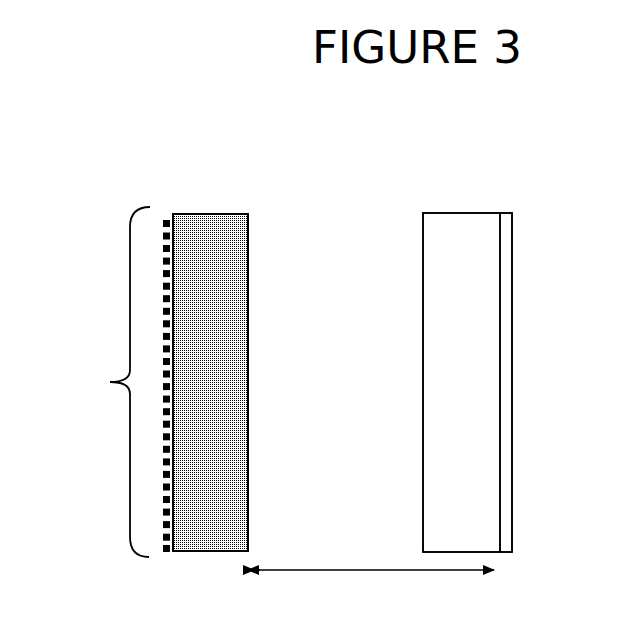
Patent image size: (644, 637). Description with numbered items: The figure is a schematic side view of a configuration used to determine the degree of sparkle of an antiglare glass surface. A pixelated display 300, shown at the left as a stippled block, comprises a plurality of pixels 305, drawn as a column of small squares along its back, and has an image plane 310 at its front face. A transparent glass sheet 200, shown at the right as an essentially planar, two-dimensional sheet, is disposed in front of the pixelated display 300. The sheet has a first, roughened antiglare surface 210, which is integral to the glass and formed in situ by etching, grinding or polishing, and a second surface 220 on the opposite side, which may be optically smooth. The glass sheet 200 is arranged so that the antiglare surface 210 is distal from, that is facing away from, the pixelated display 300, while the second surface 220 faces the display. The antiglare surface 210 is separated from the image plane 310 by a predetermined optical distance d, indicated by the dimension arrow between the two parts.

The pixelated display 300 is at (210, 356).
The pixels 305 is at (110, 382).
The image plane 310 is at (252, 331).
The transparent glass sheet 200 is at (467, 350).
The antiglare surface 210 is at (507, 208).
The second surface 220 is at (418, 263).
The predetermined optical distance d is at (371, 587).